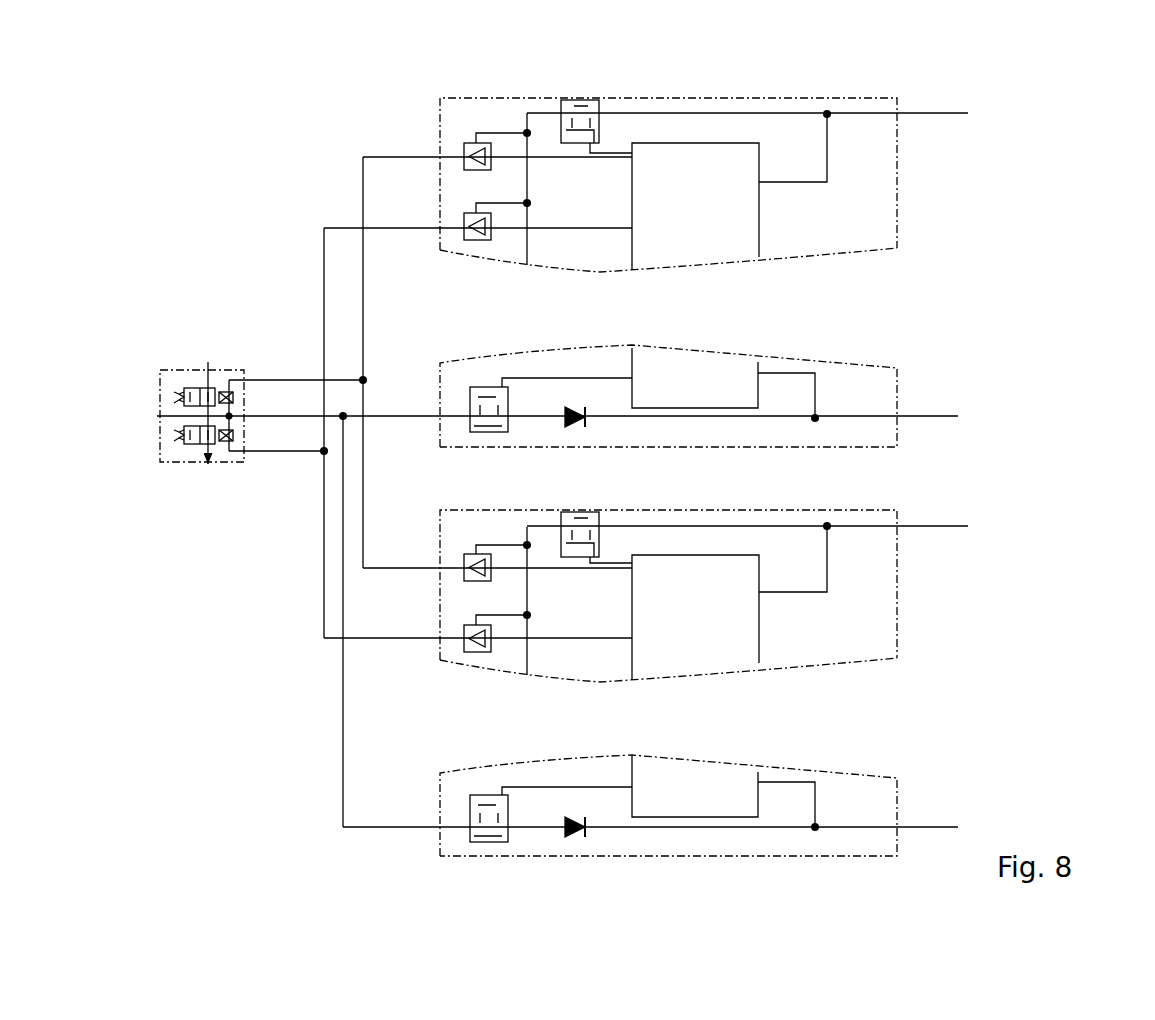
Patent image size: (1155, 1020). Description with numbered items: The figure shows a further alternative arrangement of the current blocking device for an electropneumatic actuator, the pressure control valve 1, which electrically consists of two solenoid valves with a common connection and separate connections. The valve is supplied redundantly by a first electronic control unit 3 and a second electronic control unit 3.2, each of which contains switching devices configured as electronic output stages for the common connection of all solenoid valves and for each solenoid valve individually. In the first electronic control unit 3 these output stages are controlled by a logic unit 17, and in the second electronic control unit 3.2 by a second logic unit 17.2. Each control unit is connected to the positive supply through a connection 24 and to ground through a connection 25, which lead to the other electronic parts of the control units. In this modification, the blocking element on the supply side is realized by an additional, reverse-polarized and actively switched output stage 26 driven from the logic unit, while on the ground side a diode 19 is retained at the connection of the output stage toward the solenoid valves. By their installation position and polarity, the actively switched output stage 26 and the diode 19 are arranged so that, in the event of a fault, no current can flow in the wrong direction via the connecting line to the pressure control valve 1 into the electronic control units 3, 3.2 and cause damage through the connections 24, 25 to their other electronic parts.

The pressure control valve 1 is at (196, 370).
The first electronic control unit 3 is at (763, 315).
The second electronic control unit 3.2 is at (772, 596).
The logic unit 17 is at (735, 185).
The second logic unit 17.2 is at (735, 597).
The diode 19 is at (575, 806).
The connection 24 is at (832, 137).
The connection 25 is at (723, 591).
The actively switched output stage 26 is at (575, 148).